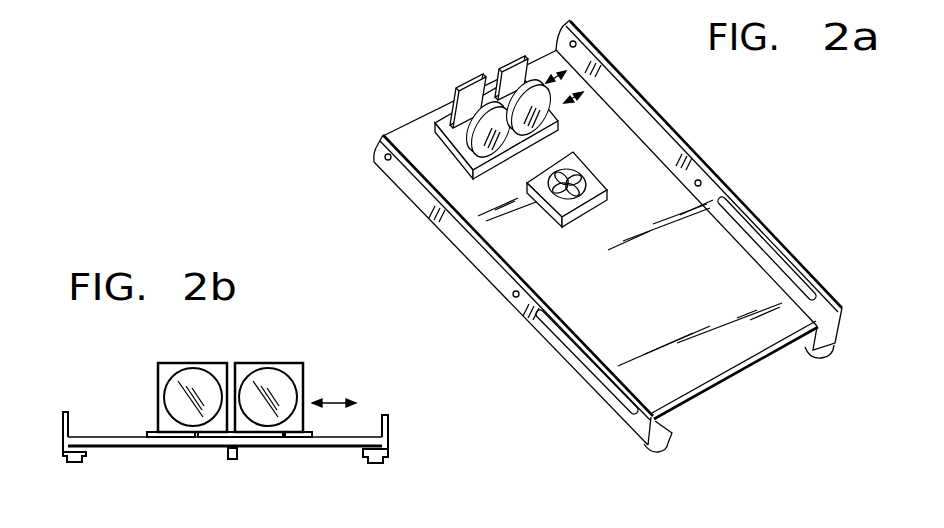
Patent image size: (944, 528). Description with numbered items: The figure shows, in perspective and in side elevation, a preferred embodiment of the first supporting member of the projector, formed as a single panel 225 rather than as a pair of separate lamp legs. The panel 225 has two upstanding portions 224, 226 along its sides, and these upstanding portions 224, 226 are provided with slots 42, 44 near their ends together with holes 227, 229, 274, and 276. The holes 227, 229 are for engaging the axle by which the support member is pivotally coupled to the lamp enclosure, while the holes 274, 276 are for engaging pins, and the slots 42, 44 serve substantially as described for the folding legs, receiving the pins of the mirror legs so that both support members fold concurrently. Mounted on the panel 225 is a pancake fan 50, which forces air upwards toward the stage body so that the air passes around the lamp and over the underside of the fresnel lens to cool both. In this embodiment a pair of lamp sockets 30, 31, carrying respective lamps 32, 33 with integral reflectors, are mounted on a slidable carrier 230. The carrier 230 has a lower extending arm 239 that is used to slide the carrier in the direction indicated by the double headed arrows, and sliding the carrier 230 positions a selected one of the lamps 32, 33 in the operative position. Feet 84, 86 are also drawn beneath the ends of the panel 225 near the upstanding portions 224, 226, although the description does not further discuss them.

In FIG. 2a, the lamp socket 30 is at (457, 111).
In FIG. 2a, the lamp socket 31 is at (509, 74).
In FIG. 2a, the lamp 32 is at (483, 148).
In FIG. 2b, the lamp 32 is at (194, 378).
In FIG. 2a, the lamp 33 is at (550, 117).
In FIG. 2b, the lamp 33 is at (270, 378).
In FIG. 2a, the slot 42 is at (586, 321).
In FIG. 2a, the slot 44 is at (763, 243).
In FIG. 2a, the pancake fan 50 is at (578, 206).
In FIG. 2a, the left foot 84 is at (659, 451).
In FIG. 2b, the left foot 84 is at (71, 463).
In FIG. 2a, the right foot 86 is at (820, 358).
In FIG. 2b, the right foot 86 is at (382, 463).
In FIG. 2a, the upstanding portion 224 is at (634, 418).
In FIG. 2b, the upstanding portion 224 is at (62, 420).
In FIG. 2a, the panel 225 is at (728, 365).
In FIG. 2b, the panel 225 is at (346, 448).
In FIG. 2a, the upstanding portion 226 is at (833, 323).
In FIG. 2b, the upstanding portion 226 is at (389, 423).
In FIG. 2a, the hole 227 is at (385, 160).
In FIG. 2a, the hole 229 is at (576, 24).
In FIG. 2a, the slidable carrier 230 is at (488, 100).
In FIG. 2b, the slidable carrier 230 is at (164, 440).
In FIG. 2b, the lower extending arm 239 is at (237, 458).
In FIG. 2a, the hole 274 is at (513, 297).
In FIG. 2a, the hole 276 is at (701, 181).